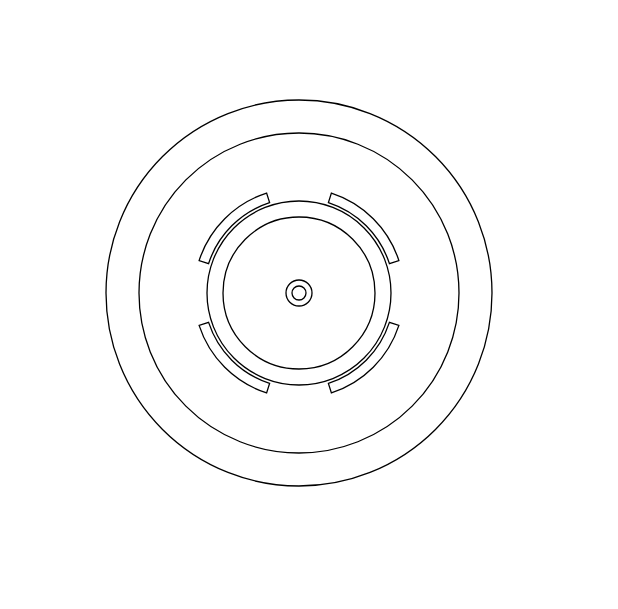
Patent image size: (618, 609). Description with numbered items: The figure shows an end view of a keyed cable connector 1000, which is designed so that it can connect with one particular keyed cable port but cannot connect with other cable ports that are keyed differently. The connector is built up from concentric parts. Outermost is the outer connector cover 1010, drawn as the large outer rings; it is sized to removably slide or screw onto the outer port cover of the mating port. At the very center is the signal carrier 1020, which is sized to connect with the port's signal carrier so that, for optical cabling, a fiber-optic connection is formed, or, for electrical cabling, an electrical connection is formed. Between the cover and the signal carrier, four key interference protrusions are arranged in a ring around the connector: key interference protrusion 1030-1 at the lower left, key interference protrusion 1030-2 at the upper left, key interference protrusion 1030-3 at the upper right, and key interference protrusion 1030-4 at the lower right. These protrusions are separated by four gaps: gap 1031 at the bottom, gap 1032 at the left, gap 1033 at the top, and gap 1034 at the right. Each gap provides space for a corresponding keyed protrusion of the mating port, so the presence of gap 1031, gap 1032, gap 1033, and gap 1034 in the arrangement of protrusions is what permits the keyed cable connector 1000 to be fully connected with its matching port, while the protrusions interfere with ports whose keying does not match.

The keyed cable connector 1000 is at (112, 95).
The outer connector cover 1010 is at (118, 222).
The signal carrier 1020 is at (299, 280).
The key interference protrusion 1030-1 is at (212, 355).
The key interference protrusion 1030-2 is at (228, 214).
The key interference protrusion 1030-3 is at (380, 216).
The key interference protrusion 1030-4 is at (398, 332).
The gap 1031 is at (296, 412).
The gap 1032 is at (182, 295).
The gap 1033 is at (325, 172).
The gap 1034 is at (415, 273).